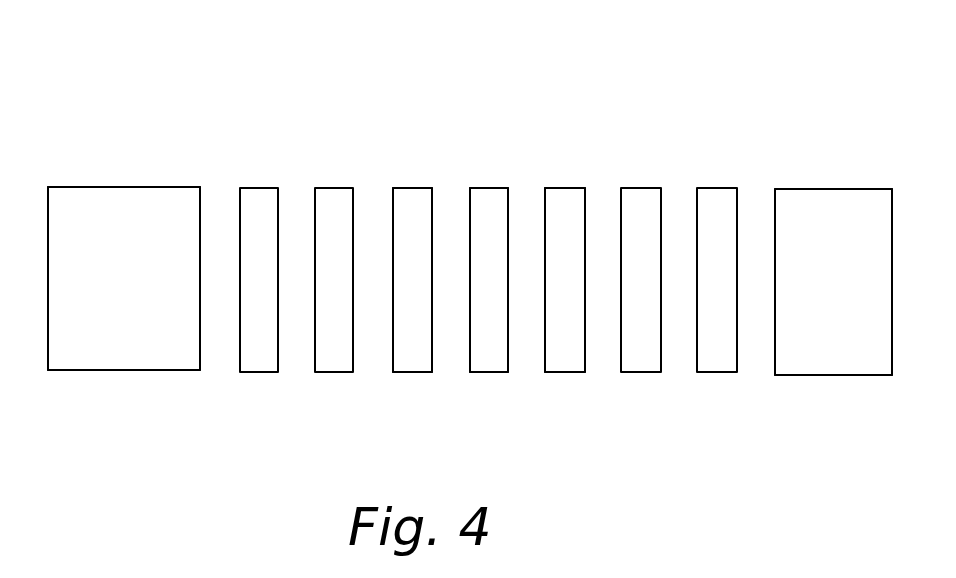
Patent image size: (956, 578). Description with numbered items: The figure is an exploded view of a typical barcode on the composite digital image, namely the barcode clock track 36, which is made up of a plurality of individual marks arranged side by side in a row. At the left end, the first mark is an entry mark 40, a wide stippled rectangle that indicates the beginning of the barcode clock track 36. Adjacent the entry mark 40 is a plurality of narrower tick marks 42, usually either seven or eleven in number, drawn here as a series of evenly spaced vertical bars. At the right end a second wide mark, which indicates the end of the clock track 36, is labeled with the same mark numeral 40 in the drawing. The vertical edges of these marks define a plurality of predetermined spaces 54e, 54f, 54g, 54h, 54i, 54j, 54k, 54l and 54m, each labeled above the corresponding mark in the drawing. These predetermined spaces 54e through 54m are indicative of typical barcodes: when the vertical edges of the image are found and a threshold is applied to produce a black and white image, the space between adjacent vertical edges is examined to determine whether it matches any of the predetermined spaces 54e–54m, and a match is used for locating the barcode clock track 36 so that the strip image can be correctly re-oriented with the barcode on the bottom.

The barcode clock track 36 is at (452, 57).
The entry mark 40 is at (145, 187).
The tick marks 42 is at (551, 388).
The predetermined space 54e is at (48, 205).
The predetermined space 54f is at (240, 197).
The predetermined space 54g is at (315, 197).
The predetermined space 54h is at (393, 193).
The predetermined space 54i is at (478, 206).
The predetermined space 54j is at (545, 197).
The predetermined space 54k is at (621, 195).
The predetermined space 54l is at (697, 197).
The predetermined space 54m is at (775, 198).